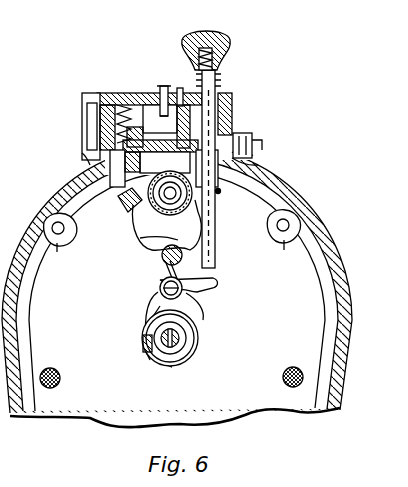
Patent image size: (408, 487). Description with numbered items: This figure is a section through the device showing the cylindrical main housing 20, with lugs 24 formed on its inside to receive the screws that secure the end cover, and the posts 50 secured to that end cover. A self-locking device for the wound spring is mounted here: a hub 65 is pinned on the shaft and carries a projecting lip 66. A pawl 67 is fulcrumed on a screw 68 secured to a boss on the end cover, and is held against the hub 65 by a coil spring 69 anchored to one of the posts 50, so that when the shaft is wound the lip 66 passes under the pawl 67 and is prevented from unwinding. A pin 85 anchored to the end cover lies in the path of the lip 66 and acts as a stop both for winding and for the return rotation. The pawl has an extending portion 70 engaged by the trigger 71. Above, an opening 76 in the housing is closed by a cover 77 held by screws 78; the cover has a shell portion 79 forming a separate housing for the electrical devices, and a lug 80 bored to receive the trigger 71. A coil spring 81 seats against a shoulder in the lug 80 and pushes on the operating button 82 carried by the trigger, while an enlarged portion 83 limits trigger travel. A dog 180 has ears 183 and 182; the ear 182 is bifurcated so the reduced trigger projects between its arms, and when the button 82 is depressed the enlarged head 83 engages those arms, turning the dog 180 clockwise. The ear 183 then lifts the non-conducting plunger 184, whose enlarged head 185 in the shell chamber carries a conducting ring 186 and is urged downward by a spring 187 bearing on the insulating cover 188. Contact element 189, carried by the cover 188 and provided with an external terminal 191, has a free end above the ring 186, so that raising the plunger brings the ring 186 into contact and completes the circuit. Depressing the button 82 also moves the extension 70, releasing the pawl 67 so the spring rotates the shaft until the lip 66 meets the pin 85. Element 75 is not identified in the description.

The main housing 20 is at (352, 330).
The lugs 24 is at (57, 250).
The posts 50 is at (57, 388).
The hub 65 is at (200, 337).
The projecting lip 66 is at (150, 353).
The pawl 67 is at (152, 306).
The screw 68 is at (185, 294).
The coil spring 69 is at (158, 272).
The extending portion 70 is at (214, 283).
The trigger 71 is at (216, 248).
The flange 75 is at (83, 153).
The opening 76 is at (250, 164).
The cover 77 is at (253, 138).
The screws 78 is at (258, 140).
The shell portion 79 is at (100, 123).
The lug 80 is at (232, 118).
The coil spring 81 is at (222, 80).
The operating button 82 is at (218, 36).
The enlarged portion 83 is at (200, 160).
The pin 85 is at (146, 336).
The dog 180 is at (135, 226).
The ear 182 is at (218, 193).
The ear 183 is at (130, 200).
The plunger 184 is at (125, 170).
The enlarged head portion 185 is at (103, 117).
The conducting ring 186 is at (153, 110).
The spring 187 is at (107, 110).
The cover 188 is at (120, 104).
The contact element 189 is at (180, 88).
The terminal 191 is at (160, 84).